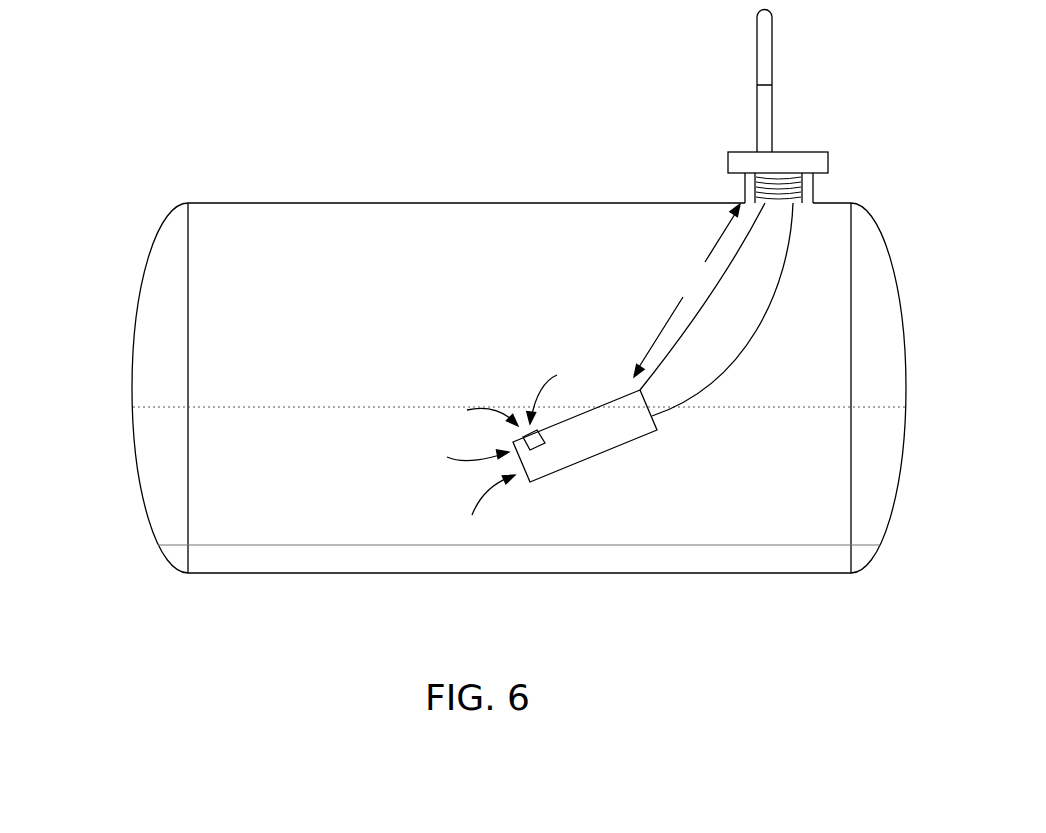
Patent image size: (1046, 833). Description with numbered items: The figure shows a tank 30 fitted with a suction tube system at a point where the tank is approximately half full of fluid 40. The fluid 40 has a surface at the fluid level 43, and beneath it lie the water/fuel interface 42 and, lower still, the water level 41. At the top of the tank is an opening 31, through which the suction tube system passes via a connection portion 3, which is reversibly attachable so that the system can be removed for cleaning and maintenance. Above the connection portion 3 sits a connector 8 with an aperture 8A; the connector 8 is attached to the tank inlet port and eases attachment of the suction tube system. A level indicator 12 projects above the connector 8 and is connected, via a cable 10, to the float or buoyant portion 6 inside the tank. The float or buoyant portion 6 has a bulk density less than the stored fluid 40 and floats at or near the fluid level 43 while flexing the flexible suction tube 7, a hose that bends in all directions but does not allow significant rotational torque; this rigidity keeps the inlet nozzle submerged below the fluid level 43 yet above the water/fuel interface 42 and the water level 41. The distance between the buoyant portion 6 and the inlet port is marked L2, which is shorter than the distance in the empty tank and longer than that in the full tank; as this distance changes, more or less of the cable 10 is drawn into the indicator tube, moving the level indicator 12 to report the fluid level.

The tank assembly 30 is at (120, 290).
The fluid 40 is at (205, 443).
The water level 41 is at (203, 563).
The water/fuel interface 42 is at (205, 545).
The fluid level 43 is at (165, 406).
The tank opening 31 is at (745, 184).
The connection portion 3 is at (800, 182).
The connector 8 is at (815, 162).
The flange through-hole 8A is at (770, 167).
The level indicator 12 is at (757, 25).
The flexible suction tube 7 is at (757, 300).
The cable 10 is at (677, 332).
The float or buoyant portion 6 is at (573, 440).
The distance L2 is at (687, 290).